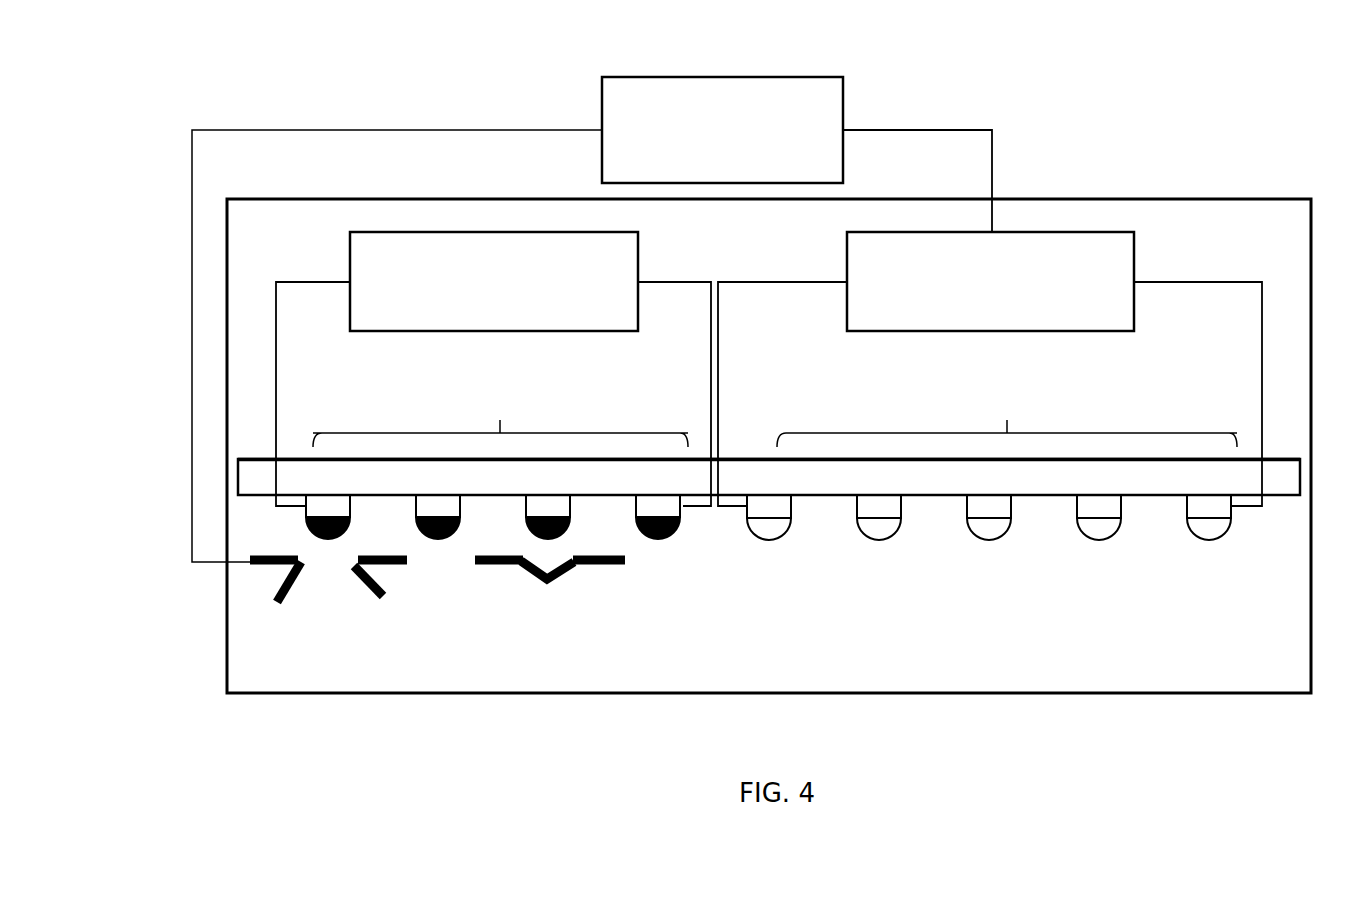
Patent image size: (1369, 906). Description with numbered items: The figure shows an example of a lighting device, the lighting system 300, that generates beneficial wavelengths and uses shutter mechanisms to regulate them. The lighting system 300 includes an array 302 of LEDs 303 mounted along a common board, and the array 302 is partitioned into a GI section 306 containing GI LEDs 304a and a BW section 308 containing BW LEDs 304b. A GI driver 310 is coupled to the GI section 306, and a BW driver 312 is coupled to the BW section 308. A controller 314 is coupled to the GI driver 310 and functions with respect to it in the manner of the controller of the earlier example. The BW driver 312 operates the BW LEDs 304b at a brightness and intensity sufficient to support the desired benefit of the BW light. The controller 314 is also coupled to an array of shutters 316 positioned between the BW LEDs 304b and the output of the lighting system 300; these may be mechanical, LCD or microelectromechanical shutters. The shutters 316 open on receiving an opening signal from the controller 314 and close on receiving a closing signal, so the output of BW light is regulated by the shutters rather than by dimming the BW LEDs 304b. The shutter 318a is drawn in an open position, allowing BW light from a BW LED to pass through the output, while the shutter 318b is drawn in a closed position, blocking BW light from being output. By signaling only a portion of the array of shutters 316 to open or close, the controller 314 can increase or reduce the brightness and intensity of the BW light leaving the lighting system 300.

The lighting system 300 is at (369, 108).
The array 302 is at (1274, 485).
The LEDs 303 is at (660, 549).
The GI LEDs 304a is at (787, 533).
The BW LEDs 304b is at (627, 518).
The GI section 306 is at (992, 518).
The BW section 308 is at (497, 513).
The GI driver 310 is at (990, 369).
The BW driver 312 is at (493, 369).
The controller 314 is at (797, 154).
The array of shutters 316 is at (237, 586).
The open shutter 318a is at (360, 585).
The closed shutter 318b is at (563, 582).